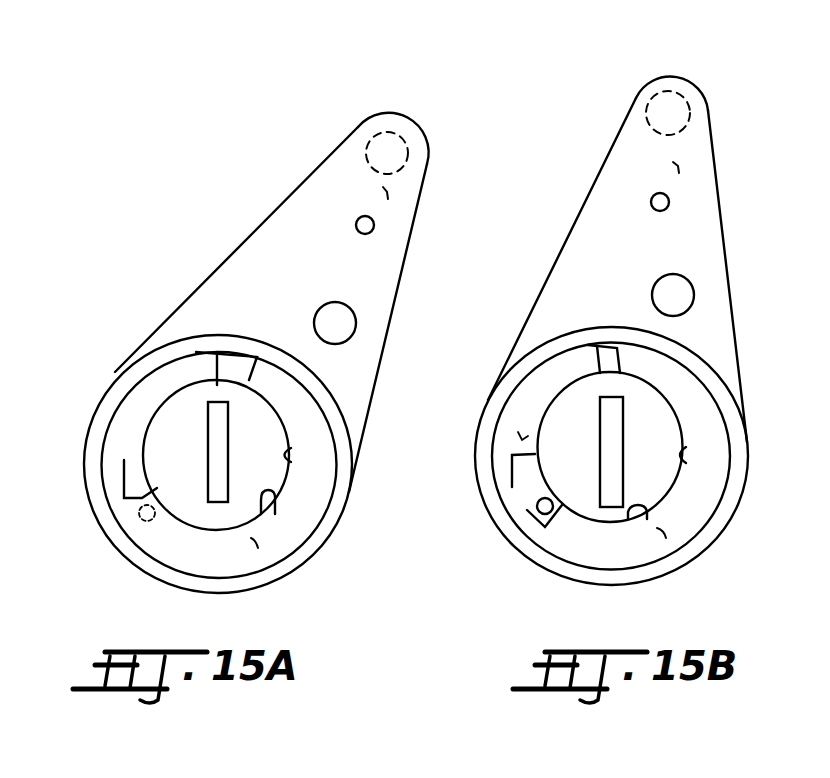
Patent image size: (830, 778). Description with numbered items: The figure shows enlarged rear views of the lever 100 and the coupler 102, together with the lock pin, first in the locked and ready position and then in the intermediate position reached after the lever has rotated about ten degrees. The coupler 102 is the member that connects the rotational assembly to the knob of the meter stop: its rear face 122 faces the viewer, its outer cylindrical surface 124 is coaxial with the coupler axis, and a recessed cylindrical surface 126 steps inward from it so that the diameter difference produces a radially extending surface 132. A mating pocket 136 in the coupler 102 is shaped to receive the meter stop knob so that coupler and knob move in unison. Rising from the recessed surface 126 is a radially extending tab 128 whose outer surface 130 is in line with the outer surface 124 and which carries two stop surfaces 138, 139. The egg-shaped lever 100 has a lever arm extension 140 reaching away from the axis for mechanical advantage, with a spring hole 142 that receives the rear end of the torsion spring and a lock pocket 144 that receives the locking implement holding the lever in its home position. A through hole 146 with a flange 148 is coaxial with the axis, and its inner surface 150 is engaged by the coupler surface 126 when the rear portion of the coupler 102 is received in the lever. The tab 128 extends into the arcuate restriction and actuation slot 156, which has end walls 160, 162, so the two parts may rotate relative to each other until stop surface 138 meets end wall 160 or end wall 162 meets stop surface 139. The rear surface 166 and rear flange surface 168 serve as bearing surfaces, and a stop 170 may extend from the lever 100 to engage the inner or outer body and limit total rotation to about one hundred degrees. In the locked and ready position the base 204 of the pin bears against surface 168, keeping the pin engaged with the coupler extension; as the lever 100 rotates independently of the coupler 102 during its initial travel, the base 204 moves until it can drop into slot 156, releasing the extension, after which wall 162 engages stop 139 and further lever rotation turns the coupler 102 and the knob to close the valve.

In FIG. 15A, the lever 100 is at (316, 148).
In FIG. 15B, the lever 100 is at (607, 124).
In FIG. 15A, the coupler 102 is at (256, 472).
In FIG. 15B, the coupler 102 is at (650, 480).
In FIG. 15A, the rear face 122 is at (170, 433).
In FIG. 15B, the rear face 122 is at (563, 412).
In FIG. 15A, the outer cylindrical surface 124 is at (292, 430).
In FIG. 15B, the outer cylindrical surface 124 is at (675, 398).
In FIG. 15A, the cylindrical surface 126 is at (142, 455).
In FIG. 15B, the cylindrical surface 126 is at (532, 455).
In FIG. 15A, the tab 128 is at (200, 358).
In FIG. 15B, the tab 128 is at (590, 345).
In FIG. 15A, the outer surface 130 is at (185, 357).
In FIG. 15B, the outer surface 130 is at (577, 345).
In FIG. 15A, the radially extending surface 132 is at (147, 522).
In FIG. 15B, the radially extending surface 132 is at (522, 437).
In FIG. 15A, the mating pocket 136 is at (219, 503).
In FIG. 15B, the mating pocket 136 is at (607, 507).
In FIG. 15A, the stop surface 138 is at (147, 357).
In FIG. 15B, the stop surface 138 is at (540, 345).
In FIG. 15A, the stop surface 139 is at (242, 352).
In FIG. 15B, the stop surface 139 is at (622, 360).
In FIG. 15A, the lever arm extension 140 is at (318, 208).
In FIG. 15B, the lever arm extension 140 is at (620, 170).
In FIG. 15A, the spring hole 142 is at (348, 324).
In FIG. 15B, the spring hole 142 is at (690, 296).
In FIG. 15A, the lock pocket 144 is at (400, 132).
In FIG. 15B, the lock pocket 144 is at (683, 93).
In FIG. 15A, the through hole 146 is at (291, 462).
In FIG. 15B, the through hole 146 is at (687, 472).
In FIG. 15A, the flange 148 is at (288, 347).
In FIG. 15B, the flange 148 is at (727, 405).
In FIG. 15A, the inner surface 150 is at (272, 495).
In FIG. 15B, the inner surface 150 is at (638, 518).
In FIG. 15A, the arcuate restriction and actuation slot 156 is at (130, 400).
In FIG. 15B, the arcuate restriction and actuation slot 156 is at (510, 495).
In FIG. 15A, the end wall 160 is at (142, 494).
In FIG. 15B, the end wall 160 is at (553, 491).
In FIG. 15A, the end wall 162 is at (250, 362).
In FIG. 15B, the end wall 162 is at (608, 340).
In FIG. 15A, the rear surface 166 is at (387, 194).
In FIG. 15B, the rear surface 166 is at (678, 166).
In FIG. 15A, the rear flange surface 168 is at (256, 548).
In FIG. 15B, the rear flange surface 168 is at (664, 537).
In FIG. 15A, the stop 170 is at (374, 224).
In FIG. 15B, the stop 170 is at (669, 202).
In FIG. 15A, the base 204 is at (131, 568).
In FIG. 15B, the base 204 is at (522, 535).